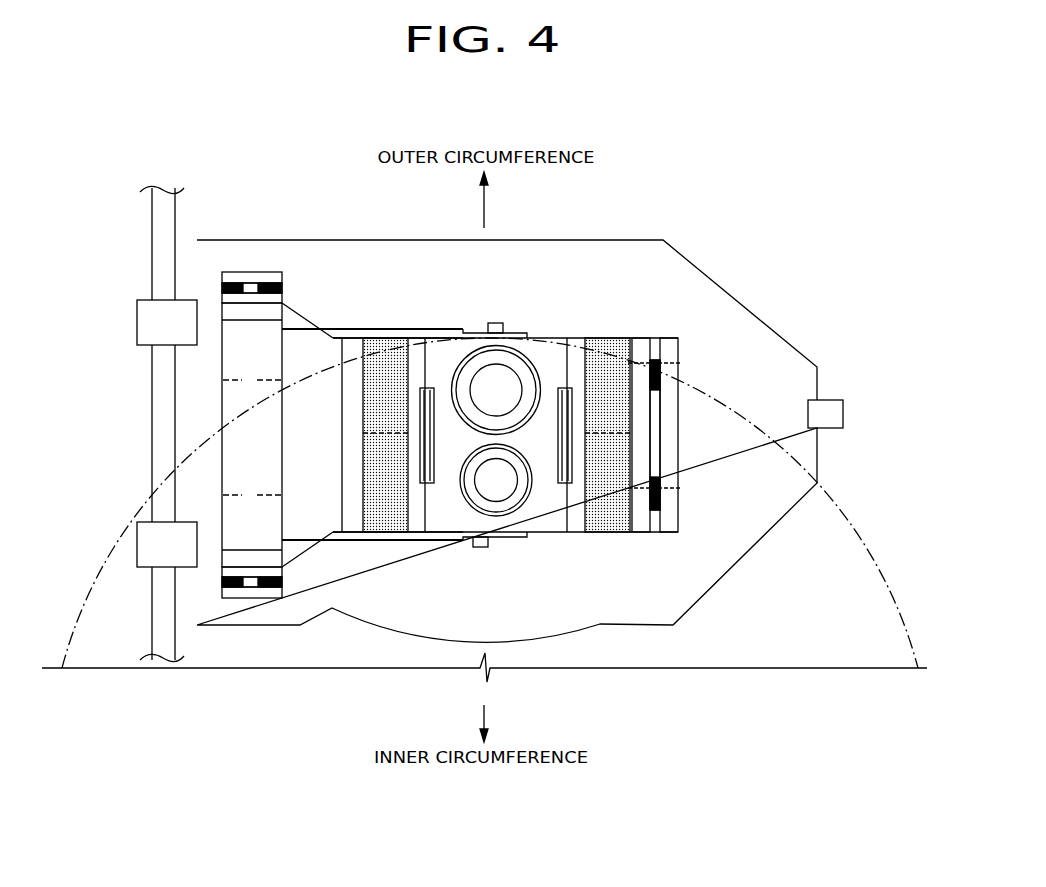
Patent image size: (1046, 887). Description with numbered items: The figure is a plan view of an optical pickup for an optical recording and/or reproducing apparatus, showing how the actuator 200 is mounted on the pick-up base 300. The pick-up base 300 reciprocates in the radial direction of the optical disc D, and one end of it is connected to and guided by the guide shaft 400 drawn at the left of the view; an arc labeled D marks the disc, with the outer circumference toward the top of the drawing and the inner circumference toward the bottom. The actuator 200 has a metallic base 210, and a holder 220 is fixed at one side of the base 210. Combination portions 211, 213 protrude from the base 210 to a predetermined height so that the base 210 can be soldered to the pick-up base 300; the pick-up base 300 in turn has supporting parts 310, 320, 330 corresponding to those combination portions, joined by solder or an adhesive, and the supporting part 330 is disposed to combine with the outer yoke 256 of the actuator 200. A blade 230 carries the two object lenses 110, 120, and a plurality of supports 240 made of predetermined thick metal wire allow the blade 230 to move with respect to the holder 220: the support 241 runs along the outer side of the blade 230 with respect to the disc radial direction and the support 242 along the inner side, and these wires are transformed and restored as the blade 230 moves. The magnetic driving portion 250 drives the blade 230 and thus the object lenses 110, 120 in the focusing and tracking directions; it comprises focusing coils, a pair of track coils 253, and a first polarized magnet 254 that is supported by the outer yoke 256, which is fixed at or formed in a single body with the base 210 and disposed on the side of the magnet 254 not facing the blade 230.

The object lens 110 is at (508, 372).
The object lens 120 is at (505, 492).
The actuator 200 is at (378, 316).
The base 210 is at (302, 348).
The combination portion 211 is at (231, 559).
The combination portion 213 is at (228, 298).
The holder 220 is at (231, 400).
The blade 230 is at (553, 358).
The supports 240 is at (402, 556).
The support 241 is at (430, 328).
The support 242 is at (340, 541).
The magnetic driving portion 250 is at (610, 318).
The track coil 253 is at (569, 463).
The first polarized magnet 254 is at (623, 341).
The outer yoke 256 is at (640, 352).
The pick-up base 300 is at (669, 258).
The supporting part 310 is at (252, 595).
The supporting part 320 is at (238, 277).
The supporting part 330 is at (670, 356).
The guide shaft 400 is at (158, 228).
The optical disc D is at (858, 534).